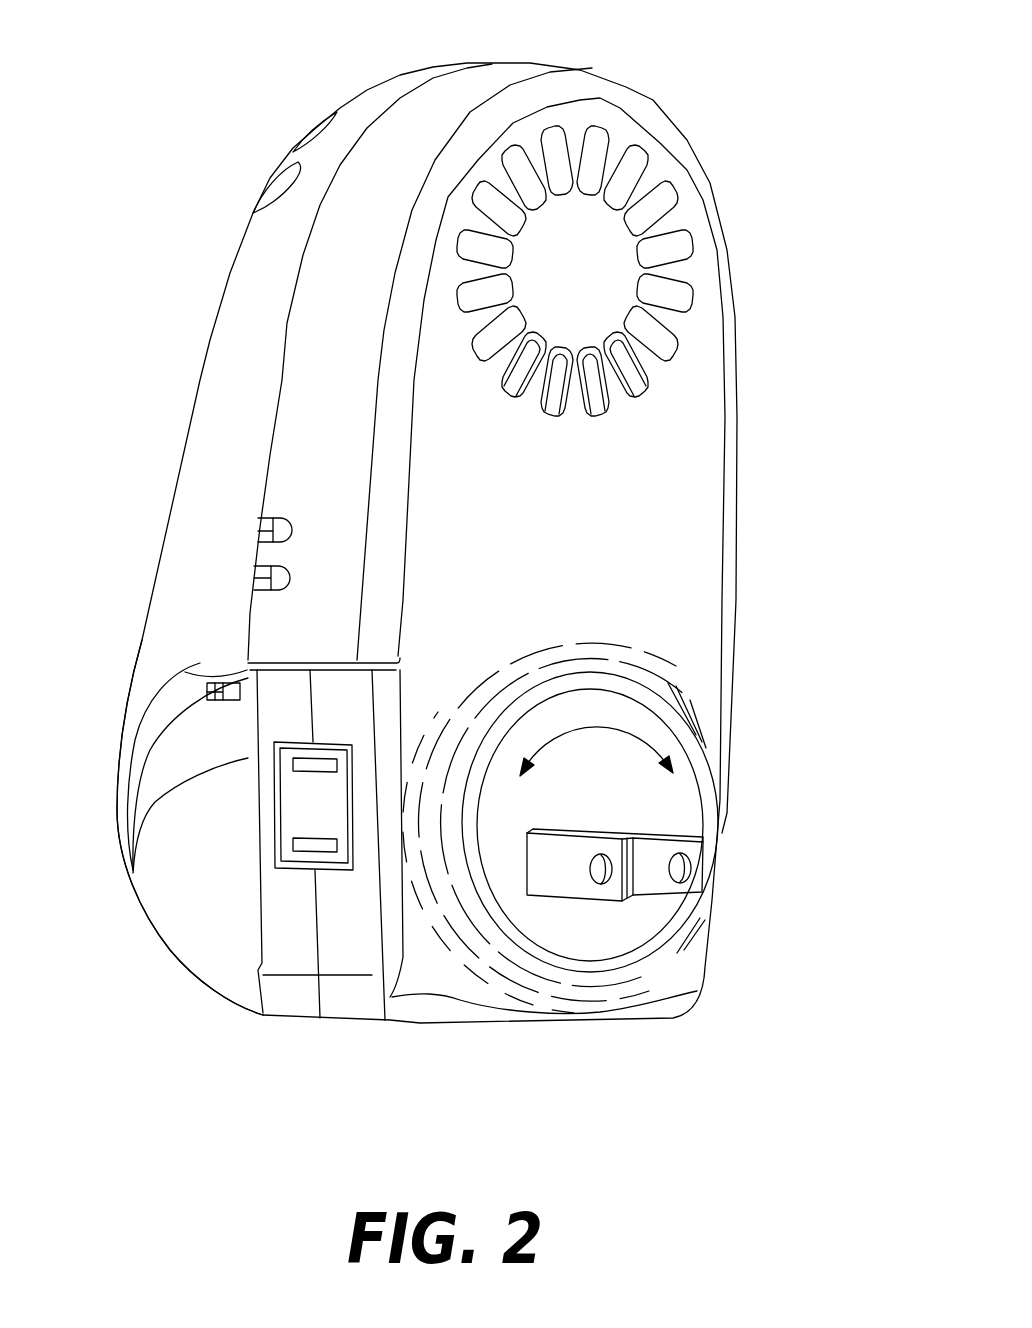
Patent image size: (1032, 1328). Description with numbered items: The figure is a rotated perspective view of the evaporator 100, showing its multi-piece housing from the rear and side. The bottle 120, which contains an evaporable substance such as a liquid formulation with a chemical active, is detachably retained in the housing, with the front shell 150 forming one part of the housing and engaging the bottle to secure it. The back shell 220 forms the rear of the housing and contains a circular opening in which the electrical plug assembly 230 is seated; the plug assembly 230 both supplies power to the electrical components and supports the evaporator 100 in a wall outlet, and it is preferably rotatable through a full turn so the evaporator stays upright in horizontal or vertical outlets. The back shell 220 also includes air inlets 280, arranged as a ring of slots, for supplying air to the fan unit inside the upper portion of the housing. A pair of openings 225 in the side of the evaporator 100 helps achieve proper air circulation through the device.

The evaporator 100 is at (750, 117).
The bottle 120 is at (186, 966).
The front shell 150 is at (138, 654).
The back shell 220 is at (737, 393).
The pair of openings 225 is at (254, 578).
The electrical plug assembly 230 is at (660, 905).
The air inlets 280 is at (552, 140).